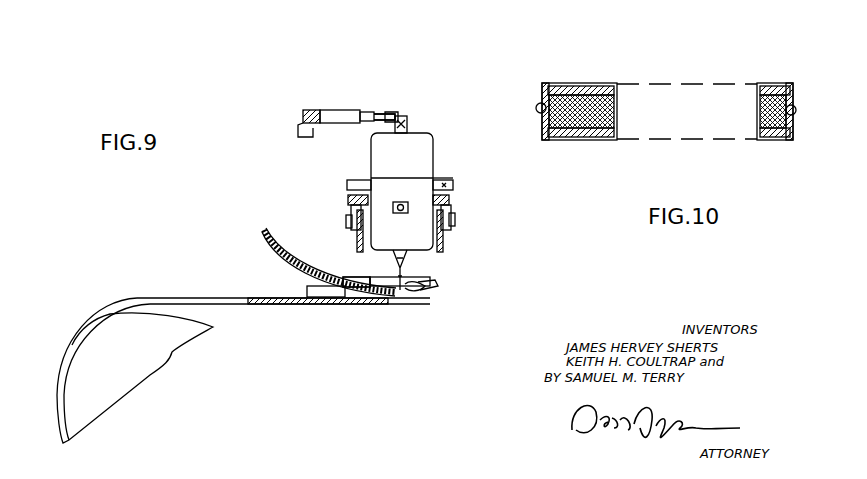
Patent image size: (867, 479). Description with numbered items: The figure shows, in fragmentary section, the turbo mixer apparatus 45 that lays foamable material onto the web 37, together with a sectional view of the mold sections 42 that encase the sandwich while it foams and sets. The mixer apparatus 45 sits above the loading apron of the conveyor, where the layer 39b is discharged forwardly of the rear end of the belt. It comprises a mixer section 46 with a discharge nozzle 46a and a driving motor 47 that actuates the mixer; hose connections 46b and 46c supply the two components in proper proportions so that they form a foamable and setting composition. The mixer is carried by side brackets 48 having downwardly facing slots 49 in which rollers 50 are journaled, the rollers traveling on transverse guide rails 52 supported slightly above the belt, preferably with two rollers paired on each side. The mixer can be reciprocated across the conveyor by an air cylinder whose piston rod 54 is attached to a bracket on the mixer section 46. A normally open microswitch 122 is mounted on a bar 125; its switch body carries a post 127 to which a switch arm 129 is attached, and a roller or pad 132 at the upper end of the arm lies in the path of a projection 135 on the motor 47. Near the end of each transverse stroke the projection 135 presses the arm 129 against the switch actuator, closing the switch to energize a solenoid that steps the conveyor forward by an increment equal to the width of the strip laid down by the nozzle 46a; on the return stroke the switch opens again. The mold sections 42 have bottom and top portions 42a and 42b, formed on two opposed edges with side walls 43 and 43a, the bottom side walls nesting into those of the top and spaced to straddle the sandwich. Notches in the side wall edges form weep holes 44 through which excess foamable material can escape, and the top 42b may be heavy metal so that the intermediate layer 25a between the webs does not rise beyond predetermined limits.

In FIG. 9, the web 37 is at (264, 232).
In FIG. 9, the layer 39b is at (417, 288).
In FIG. 10, the mold section 42 is at (544, 73).
In FIG. 9, the bottom portion 42a is at (335, 304).
In FIG. 10, the bottom portion 42a is at (611, 137).
In FIG. 10, the top portion 42b is at (607, 86).
In FIG. 9, the side wall 43 is at (305, 292).
In FIG. 10, the side wall 43 is at (790, 140).
In FIG. 10, the side wall 43a is at (544, 128).
In FIG. 9, the weep hole 44 is at (345, 286).
In FIG. 10, the weep hole 44 is at (537, 114).
In FIG. 9, the turbo mixer apparatus 45 is at (446, 177).
In FIG. 9, the mixer section 46 is at (402, 191).
In FIG. 9, the discharge nozzle 46a is at (410, 254).
In FIG. 9, the hose connection 46b is at (454, 185).
In FIG. 9, the hose connection 46c is at (357, 184).
In FIG. 9, the driving motor 47 is at (436, 142).
In FIG. 9, the side bracket 48 is at (348, 197).
In FIG. 9, the downwardly facing slot 49 is at (352, 208).
In FIG. 9, the roller 50 is at (350, 222).
In FIG. 9, the transverse guide rail 52 is at (357, 246).
In FIG. 9, the piston rod 54 is at (401, 202).
In FIG. 10, the intermediate layer 25a is at (614, 108).
In FIG. 9, the microswitch 122 is at (341, 104).
In FIG. 9, the bar 125 is at (310, 110).
In FIG. 9, the post 127 is at (364, 112).
In FIG. 9, the switch arm 129 is at (392, 112).
In FIG. 9, the roller or pad 132 is at (388, 117).
In FIG. 9, the projection 135 is at (403, 120).